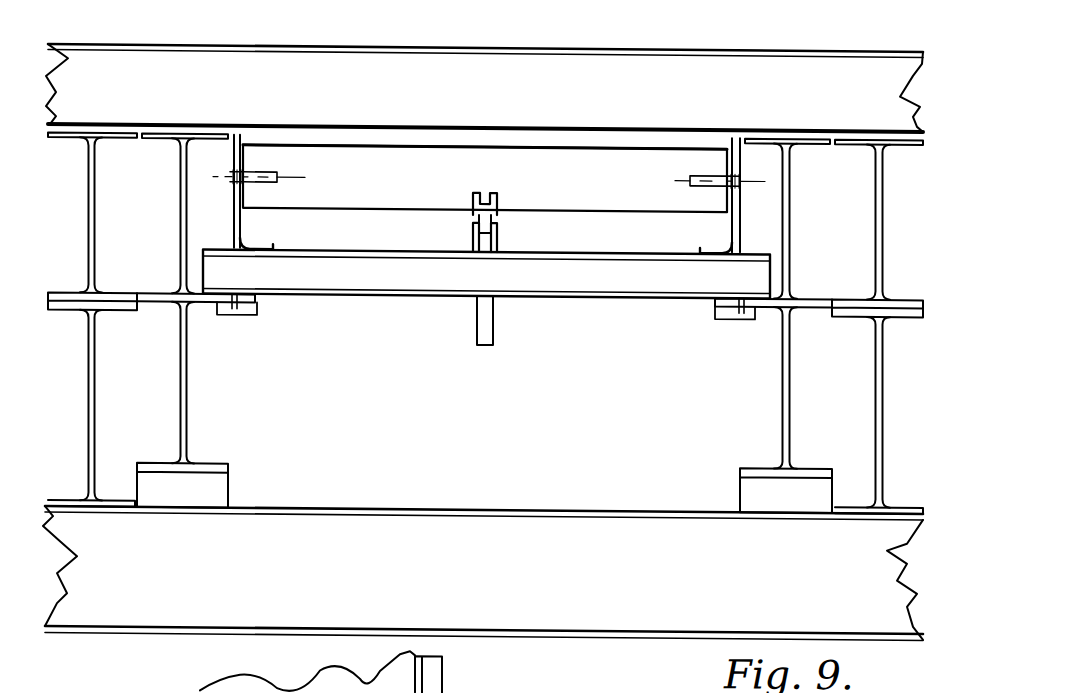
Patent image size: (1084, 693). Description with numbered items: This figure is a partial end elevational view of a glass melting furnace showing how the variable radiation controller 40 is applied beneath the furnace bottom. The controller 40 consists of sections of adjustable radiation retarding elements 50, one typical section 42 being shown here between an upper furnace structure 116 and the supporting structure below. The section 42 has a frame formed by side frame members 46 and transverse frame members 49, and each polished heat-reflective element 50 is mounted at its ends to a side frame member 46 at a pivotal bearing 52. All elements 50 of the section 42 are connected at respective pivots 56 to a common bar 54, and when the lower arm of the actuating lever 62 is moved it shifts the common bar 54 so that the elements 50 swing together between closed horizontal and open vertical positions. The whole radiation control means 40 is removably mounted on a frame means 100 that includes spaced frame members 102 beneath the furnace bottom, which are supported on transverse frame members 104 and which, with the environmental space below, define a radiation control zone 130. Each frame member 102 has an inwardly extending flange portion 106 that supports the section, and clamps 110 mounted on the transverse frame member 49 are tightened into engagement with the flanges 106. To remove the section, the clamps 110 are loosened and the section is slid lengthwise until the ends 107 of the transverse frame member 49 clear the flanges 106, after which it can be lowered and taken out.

The upper beam 116 is at (196, 64).
The frame means 100 is at (800, 212).
The adjustable radiation controlling surface forming element 50 is at (376, 157).
The pivotal bearing 52 is at (243, 163).
The side frame member 46 is at (233, 212).
The pivot 56 is at (556, 178).
The common bar 54 is at (478, 218).
The section 42 is at (357, 287).
The end 107 is at (216, 272).
The transverse frame member 49 is at (426, 283).
The actuating lever 62 is at (493, 318).
The variable radiation controller 40 is at (615, 295).
The flange portion 106 is at (219, 309).
The clamp 110 is at (246, 312).
The frame member 102 is at (181, 383).
The transverse frame member 104 is at (565, 530).
The radiation control zone 130 is at (380, 470).